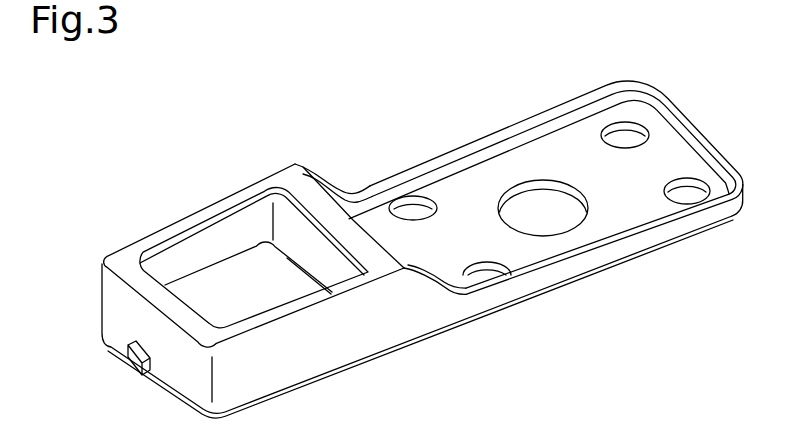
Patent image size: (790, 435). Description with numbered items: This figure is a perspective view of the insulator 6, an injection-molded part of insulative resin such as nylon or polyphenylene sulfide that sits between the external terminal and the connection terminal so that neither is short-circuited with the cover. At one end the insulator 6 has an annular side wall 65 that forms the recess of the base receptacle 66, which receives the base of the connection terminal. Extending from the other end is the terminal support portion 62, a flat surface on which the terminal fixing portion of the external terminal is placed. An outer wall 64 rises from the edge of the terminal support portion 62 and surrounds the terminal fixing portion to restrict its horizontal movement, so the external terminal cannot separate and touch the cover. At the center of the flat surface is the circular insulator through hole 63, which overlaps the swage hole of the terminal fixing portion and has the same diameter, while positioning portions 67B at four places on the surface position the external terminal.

The insulator 6 is at (166, 189).
The terminal support portion 62 is at (677, 157).
The insulator through hole 63 is at (520, 226).
The outer wall 64 is at (602, 92).
The side wall 65 is at (281, 182).
The base receptacle 66 is at (213, 230).
The positioning portions 67B is at (626, 133).